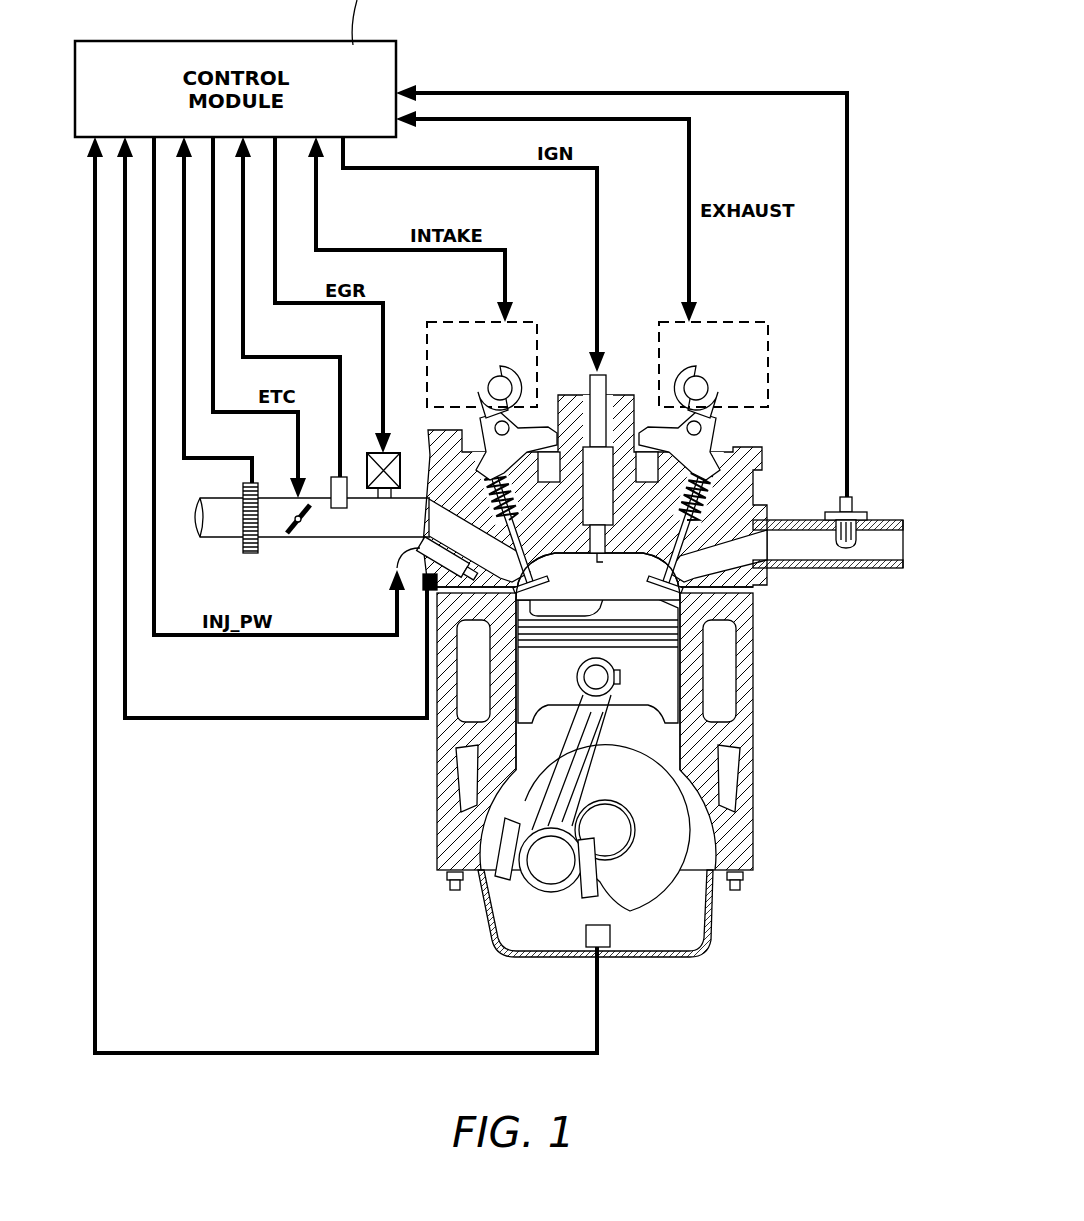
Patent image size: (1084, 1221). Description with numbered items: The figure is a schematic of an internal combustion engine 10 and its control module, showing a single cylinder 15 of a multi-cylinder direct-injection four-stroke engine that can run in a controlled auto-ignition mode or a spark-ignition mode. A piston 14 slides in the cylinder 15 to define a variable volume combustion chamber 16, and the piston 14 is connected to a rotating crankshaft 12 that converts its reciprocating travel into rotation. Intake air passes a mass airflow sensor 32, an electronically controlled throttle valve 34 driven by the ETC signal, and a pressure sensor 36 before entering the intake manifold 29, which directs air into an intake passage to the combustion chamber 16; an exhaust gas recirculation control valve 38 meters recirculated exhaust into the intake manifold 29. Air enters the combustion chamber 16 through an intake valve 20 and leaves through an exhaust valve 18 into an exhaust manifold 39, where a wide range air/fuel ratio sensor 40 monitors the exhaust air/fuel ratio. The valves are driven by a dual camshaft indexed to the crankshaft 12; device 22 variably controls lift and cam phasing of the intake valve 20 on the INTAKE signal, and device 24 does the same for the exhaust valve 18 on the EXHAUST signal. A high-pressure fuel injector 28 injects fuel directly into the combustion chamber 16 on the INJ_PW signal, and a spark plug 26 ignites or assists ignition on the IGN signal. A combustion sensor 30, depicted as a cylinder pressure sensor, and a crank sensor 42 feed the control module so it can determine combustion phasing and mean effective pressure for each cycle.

The internal combustion engine 10 is at (735, 733).
The crankshaft 12 is at (655, 888).
The piston 14 is at (661, 690).
The cylinder 15 is at (681, 608).
The combustion chamber 16 is at (575, 599).
The exhaust valve 18 is at (660, 563).
The intake valve 20 is at (530, 548).
The intake valve lift and cam phasing device 22 is at (528, 320).
The exhaust valve lift and cam phasing device 24 is at (770, 383).
The spark plug 26 is at (614, 320).
The fuel injector 28 is at (393, 562).
The intake manifold 29 is at (410, 497).
The combustion sensor 30 is at (427, 596).
The mass airflow sensor 32 is at (250, 553).
The throttle valve 34 is at (293, 533).
The pressure sensor 36 is at (336, 508).
The exhaust gas recirculation control valve 38 is at (375, 488).
The exhaust manifold 39 is at (757, 530).
The wide range air/fuel ratio sensor 40 is at (850, 505).
The crank sensor 42 is at (590, 942).